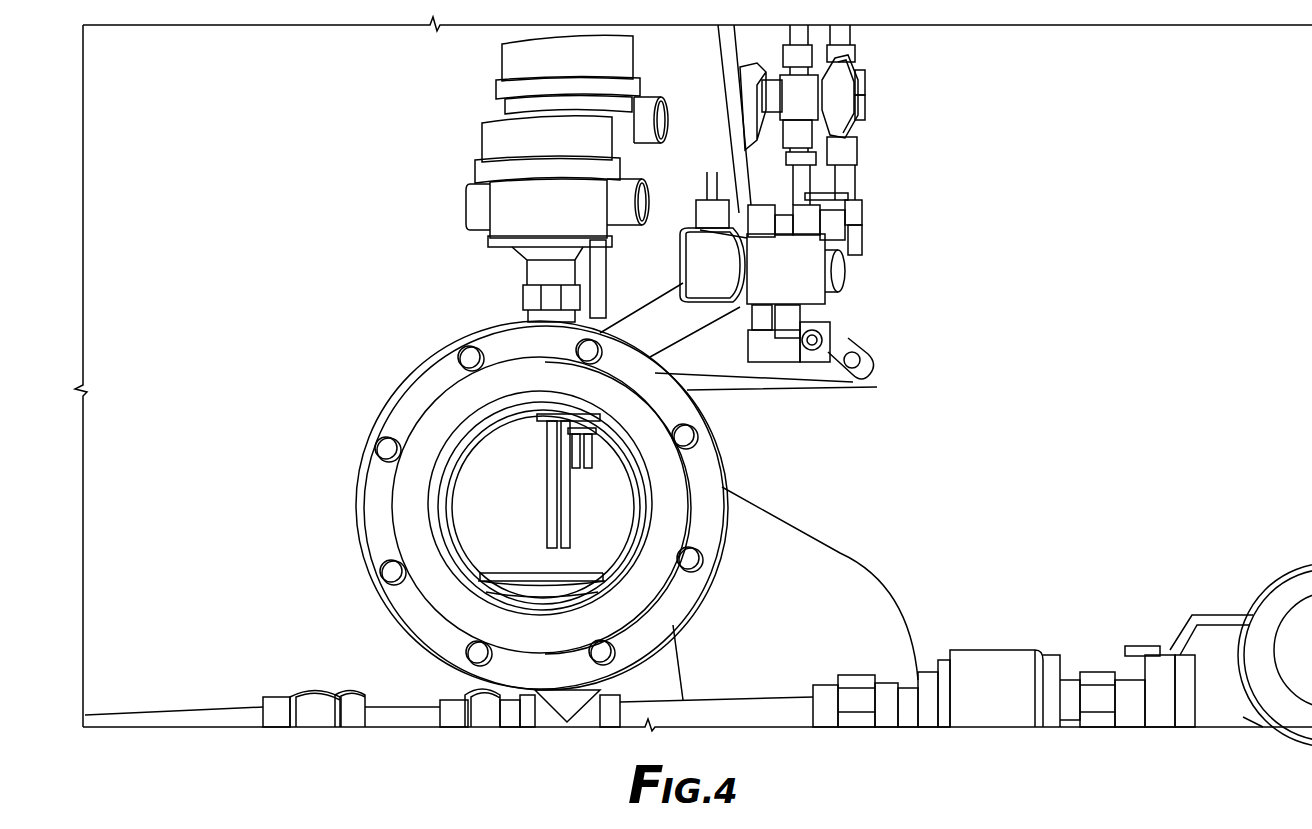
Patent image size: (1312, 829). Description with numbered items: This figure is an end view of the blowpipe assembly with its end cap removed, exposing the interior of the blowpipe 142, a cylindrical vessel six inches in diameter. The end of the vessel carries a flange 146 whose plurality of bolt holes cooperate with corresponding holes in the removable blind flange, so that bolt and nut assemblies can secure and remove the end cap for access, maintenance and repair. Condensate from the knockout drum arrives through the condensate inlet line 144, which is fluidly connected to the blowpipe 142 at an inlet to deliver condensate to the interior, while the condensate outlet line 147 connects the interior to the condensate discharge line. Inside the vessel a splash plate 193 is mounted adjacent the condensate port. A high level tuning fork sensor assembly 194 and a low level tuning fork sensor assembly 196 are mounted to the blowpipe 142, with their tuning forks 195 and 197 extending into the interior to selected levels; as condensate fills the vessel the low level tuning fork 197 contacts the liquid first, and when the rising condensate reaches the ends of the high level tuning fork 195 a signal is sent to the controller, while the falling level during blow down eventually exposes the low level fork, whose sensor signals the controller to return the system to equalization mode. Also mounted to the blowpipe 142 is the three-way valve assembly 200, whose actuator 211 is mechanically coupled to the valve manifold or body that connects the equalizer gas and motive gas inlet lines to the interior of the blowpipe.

The blowpipe 142 is at (843, 558).
The condensate inlet line 144 is at (207, 708).
The flange 146 is at (395, 393).
The condensate outlet line 147 is at (752, 697).
The splash plate 193 is at (510, 588).
The high level tuning fork sensor assembly 194 is at (497, 65).
The tuning fork 195 is at (590, 450).
The low level tuning fork sensor assembly 196 is at (477, 148).
The tuning fork 197 is at (567, 497).
The three-way valve assembly 200 is at (905, 147).
The actuator 211 is at (708, 260).